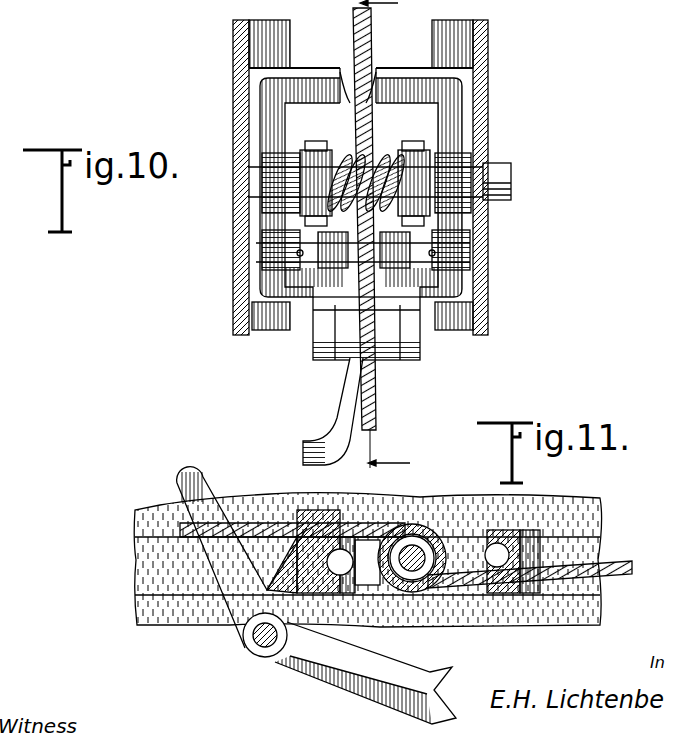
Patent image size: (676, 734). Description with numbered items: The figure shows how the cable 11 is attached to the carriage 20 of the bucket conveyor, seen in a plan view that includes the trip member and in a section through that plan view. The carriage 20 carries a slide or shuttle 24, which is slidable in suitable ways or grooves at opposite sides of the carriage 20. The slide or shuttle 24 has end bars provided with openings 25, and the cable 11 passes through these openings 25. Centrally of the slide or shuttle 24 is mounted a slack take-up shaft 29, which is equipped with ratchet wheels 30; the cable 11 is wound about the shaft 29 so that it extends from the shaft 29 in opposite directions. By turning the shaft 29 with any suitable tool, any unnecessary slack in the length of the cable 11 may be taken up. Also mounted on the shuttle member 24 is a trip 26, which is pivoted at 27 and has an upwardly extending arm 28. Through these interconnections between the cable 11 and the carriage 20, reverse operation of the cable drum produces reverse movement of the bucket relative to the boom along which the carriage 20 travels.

In FIG. 10, the cable 11 is at (356, 32).
In FIG. 11, the cable 11 is at (165, 521).
In FIG. 10, the carriage 20 is at (455, 58).
In FIG. 11, the carriage 20 is at (440, 510).
In FIG. 10, the slide or shuttle 24 is at (458, 122).
In FIG. 11, the slide or shuttle 24 is at (373, 587).
In FIG. 10, the openings 25 is at (372, 72).
In FIG. 11, the openings 25 is at (300, 518).
In FIG. 10, the trip 26 is at (377, 230).
In FIG. 11, the trip 26 is at (312, 667).
In FIG. 11, the pivot 27 is at (250, 642).
In FIG. 10, the arm 28 is at (350, 405).
In FIG. 11, the arm 28 is at (197, 507).
In FIG. 10, the slack take-up shaft 29 is at (490, 170).
In FIG. 10, the ratchet wheels 30 is at (427, 148).
In FIG. 11, the ratchet wheels 30 is at (425, 590).